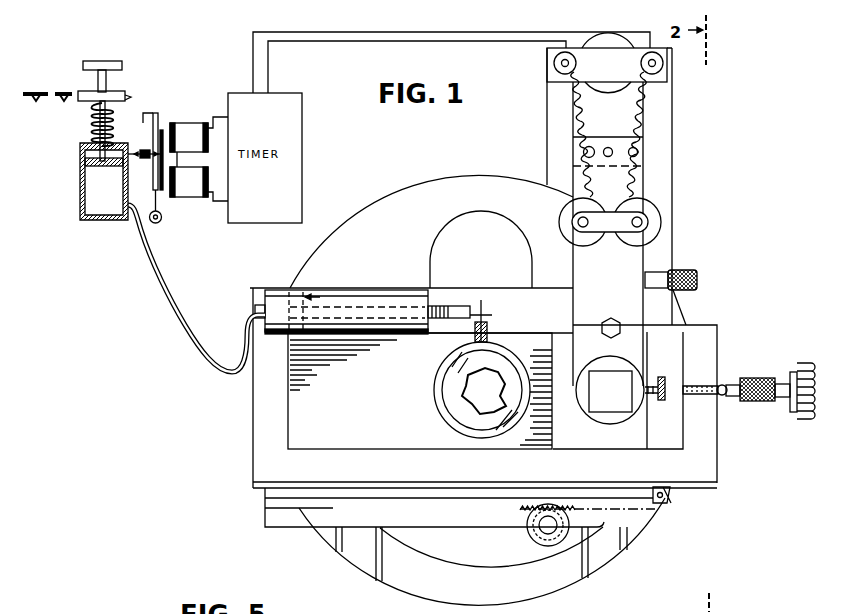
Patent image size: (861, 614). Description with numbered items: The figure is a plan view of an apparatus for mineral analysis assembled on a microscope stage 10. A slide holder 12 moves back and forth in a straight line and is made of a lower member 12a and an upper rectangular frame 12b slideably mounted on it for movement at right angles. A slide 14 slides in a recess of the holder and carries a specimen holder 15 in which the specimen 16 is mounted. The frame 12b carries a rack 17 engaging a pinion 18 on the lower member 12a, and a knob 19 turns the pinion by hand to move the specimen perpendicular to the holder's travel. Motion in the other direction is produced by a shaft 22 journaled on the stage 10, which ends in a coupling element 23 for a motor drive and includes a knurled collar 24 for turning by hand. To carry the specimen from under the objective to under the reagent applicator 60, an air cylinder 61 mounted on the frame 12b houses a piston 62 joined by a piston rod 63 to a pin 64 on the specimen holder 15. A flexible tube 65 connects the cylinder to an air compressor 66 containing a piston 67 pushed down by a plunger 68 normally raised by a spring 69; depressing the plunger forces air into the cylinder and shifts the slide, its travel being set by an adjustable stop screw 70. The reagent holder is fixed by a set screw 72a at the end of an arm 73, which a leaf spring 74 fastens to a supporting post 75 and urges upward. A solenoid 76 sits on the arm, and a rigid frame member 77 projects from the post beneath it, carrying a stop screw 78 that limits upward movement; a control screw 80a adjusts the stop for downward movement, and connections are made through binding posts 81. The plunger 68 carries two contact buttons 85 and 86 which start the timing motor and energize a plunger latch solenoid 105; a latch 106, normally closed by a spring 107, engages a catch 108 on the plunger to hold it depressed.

The microscope stage 10 is at (560, 583).
The slide holder 12 is at (246, 505).
The lower member 12a is at (445, 553).
The upper rectangular frame 12b is at (253, 472).
The slide 14 is at (300, 395).
The specimen holder 15 is at (438, 374).
The specimen 16 is at (465, 394).
The rack 17 is at (667, 503).
The pinion 18 is at (528, 525).
The knob 19 is at (530, 538).
The shaft 22 is at (737, 401).
The coupling element 23 is at (797, 413).
The knurled collar 24 is at (755, 378).
The reagent applicator 60 is at (642, 424).
The air cylinder 61 is at (354, 290).
The piston 62 is at (324, 290).
The piston rod 63 is at (446, 306).
The pin 64 is at (488, 327).
The flexible tube 65 is at (158, 288).
The air compressor 66 is at (80, 183).
The piston 67 is at (103, 166).
The plunger 68 is at (122, 66).
The spring 69 is at (89, 128).
The adjustable stop screw 70 is at (722, 384).
The set screw 72a is at (661, 377).
The arm 73 is at (650, 270).
The leaf spring 74 is at (640, 108).
The supporting post 75 is at (608, 36).
The solenoid 76 is at (598, 238).
The rigid frame member 77 is at (670, 147).
The stop screw 78 is at (611, 318).
The control screw 80a is at (699, 275).
The binding posts 81 is at (554, 63).
The contact button 85 is at (35, 107).
The contact button 86 is at (63, 107).
The plunger latch solenoid 105 is at (188, 125).
The latch 106 is at (150, 114).
The spring 107 is at (144, 149).
The catch 108 is at (127, 96).